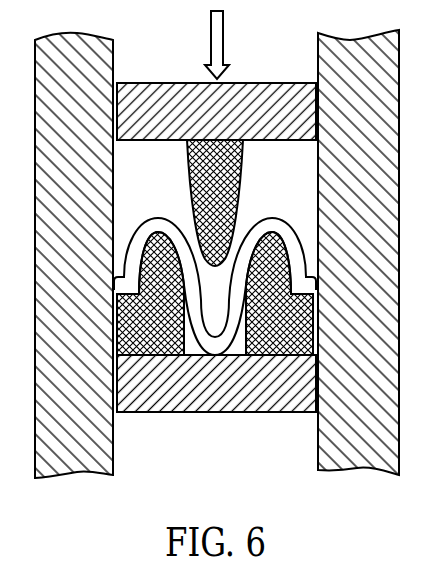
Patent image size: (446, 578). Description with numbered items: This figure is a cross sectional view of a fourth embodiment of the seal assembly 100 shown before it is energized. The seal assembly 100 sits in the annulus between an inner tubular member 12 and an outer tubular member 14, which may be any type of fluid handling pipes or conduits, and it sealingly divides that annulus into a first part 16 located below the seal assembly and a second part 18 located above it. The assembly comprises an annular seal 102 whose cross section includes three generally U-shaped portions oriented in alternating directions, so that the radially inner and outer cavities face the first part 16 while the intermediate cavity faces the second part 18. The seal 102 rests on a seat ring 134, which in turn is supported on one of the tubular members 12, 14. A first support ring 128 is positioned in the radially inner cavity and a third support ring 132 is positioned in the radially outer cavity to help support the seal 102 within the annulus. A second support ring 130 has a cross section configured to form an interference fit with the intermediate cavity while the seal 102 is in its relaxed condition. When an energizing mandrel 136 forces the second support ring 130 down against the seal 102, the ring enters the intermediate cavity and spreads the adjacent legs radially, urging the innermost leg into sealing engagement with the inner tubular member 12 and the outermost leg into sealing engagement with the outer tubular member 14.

The inner tubular member 12 is at (82, 385).
The outer tubular member 14 is at (370, 384).
The first part of the annulus 16 is at (228, 490).
The second part of the annulus 18 is at (288, 68).
The seal assembly 100 is at (215, 357).
The annular seal 102 is at (273, 216).
The first support ring 128 is at (150, 357).
The second support ring 130 is at (187, 167).
The third support ring 132 is at (298, 357).
The seat ring 134 is at (258, 413).
The energizing mandrel 136 is at (157, 82).